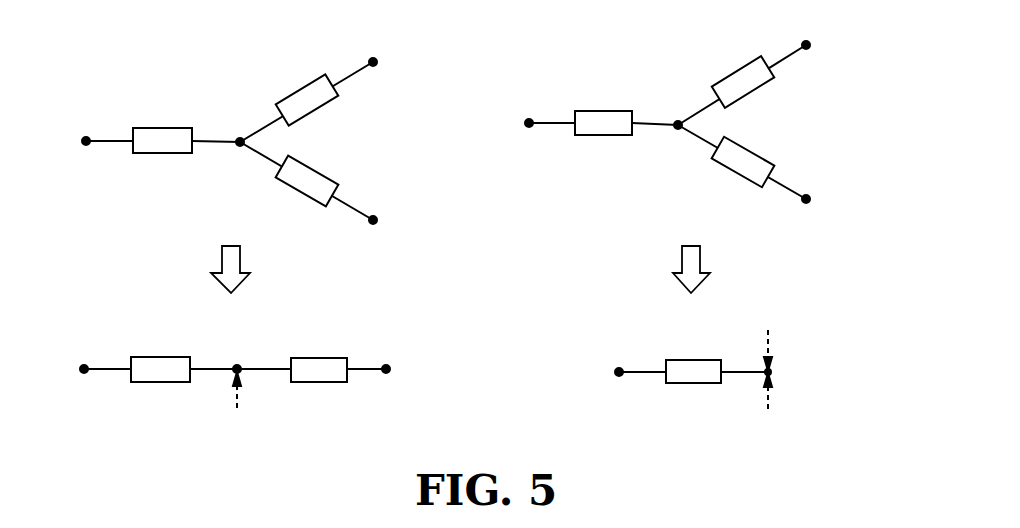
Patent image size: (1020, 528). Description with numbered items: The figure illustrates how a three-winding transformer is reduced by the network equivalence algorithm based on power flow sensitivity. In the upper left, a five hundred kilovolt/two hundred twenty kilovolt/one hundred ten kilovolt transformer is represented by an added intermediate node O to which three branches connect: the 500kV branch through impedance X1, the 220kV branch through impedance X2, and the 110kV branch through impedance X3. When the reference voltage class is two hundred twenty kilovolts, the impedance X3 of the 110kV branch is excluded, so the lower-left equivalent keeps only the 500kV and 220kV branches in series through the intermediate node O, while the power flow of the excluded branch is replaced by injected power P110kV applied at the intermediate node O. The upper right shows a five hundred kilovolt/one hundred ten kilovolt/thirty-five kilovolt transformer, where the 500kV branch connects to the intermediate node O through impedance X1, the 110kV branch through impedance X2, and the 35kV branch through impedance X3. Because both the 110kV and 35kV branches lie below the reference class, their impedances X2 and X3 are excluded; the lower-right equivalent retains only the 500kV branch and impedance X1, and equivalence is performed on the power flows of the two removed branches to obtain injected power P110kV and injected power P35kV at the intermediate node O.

The 500 kV branch 500kV is at (345, 247).
The impedance of the 500 kV branch X1 is at (449, 247).
The impedance of the second branch X2 is at (523, 93).
The impedance of the third branch X3 is at (523, 172).
The intermediate node O is at (502, 242).
The 220 kV branch 220kV is at (377, 217).
The 110 kV branch 110kV is at (622, 215).
The 35 kV branch 35kV is at (833, 44).
The injected power of the 110 kV branch P110kV is at (505, 411).
The injected power of the 35 kV branch P35kV is at (768, 335).